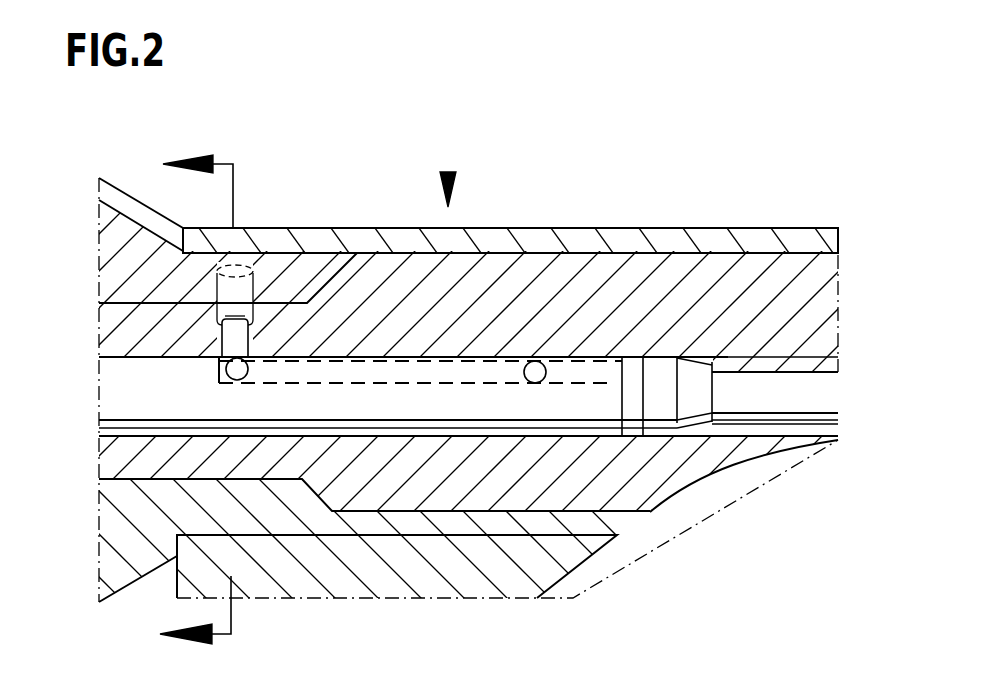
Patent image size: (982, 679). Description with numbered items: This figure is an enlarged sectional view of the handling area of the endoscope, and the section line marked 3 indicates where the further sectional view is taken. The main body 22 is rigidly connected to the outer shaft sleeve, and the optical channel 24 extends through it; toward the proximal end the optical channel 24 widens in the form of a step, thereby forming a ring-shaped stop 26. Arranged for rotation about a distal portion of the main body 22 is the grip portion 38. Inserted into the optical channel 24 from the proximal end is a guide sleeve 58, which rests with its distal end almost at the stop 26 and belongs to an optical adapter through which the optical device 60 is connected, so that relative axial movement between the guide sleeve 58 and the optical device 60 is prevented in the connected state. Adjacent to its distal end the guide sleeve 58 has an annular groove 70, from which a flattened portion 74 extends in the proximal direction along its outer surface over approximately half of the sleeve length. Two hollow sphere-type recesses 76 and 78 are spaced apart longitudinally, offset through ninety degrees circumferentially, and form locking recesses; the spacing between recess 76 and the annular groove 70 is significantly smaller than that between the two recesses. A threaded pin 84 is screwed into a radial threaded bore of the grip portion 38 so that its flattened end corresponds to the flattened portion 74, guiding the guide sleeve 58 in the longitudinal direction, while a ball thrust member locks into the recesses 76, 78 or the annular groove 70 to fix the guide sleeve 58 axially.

The main body 22 is at (620, 480).
The optical channel 24 is at (815, 376).
The ring-shaped stop 26 is at (707, 355).
The grip portion 38 is at (448, 172).
The guide sleeve 58 is at (595, 397).
The optical device 60 is at (793, 365).
The annular groove 70 is at (631, 395).
The flattened portion 74 is at (428, 375).
The hollow sphere-type recess 76 is at (533, 358).
The hollow sphere-type recess 78 is at (230, 370).
The threaded pin 84 is at (258, 275).
The section line 3 is at (210, 396).